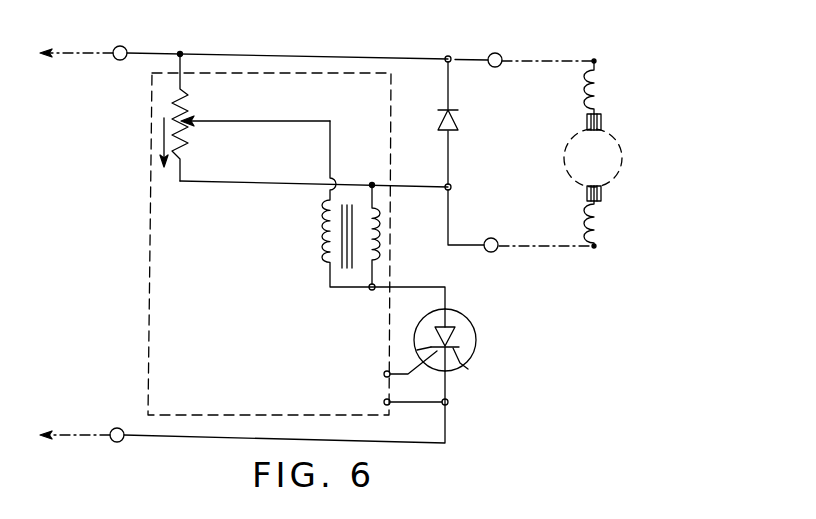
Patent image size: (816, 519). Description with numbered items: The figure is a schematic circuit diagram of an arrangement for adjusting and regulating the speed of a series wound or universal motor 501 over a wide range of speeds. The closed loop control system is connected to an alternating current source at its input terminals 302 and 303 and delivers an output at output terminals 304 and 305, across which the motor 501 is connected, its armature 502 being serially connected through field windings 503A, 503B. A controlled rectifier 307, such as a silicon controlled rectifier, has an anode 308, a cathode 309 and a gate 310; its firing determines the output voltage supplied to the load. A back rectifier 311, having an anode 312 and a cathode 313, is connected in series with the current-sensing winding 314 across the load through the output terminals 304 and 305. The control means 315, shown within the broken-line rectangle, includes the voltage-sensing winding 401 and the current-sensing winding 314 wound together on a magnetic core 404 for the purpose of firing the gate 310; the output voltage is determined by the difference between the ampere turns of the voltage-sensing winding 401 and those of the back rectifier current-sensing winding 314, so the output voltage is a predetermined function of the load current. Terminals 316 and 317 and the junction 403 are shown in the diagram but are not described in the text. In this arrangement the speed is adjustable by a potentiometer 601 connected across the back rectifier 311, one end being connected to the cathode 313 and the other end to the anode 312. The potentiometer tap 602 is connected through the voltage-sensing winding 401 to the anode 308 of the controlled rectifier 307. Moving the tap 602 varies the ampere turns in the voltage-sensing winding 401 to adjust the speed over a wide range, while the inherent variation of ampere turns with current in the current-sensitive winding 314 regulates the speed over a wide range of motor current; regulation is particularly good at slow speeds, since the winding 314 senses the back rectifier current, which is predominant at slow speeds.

The input terminal 302 is at (119, 61).
The input terminal 303 is at (128, 442).
The output terminal 304 is at (500, 55).
The output terminal 305 is at (492, 252).
The controlled rectifier 307 is at (456, 339).
The anode 308 is at (451, 333).
The cathode 309 is at (469, 367).
The gate 310 is at (417, 350).
The back rectifier 311 is at (479, 121).
The anode of back rectifier 312 is at (453, 131).
The cathode of back rectifier 313 is at (452, 109).
The current-sensing winding 314 is at (379, 244).
The control means 315 is at (292, 99).
The gate terminal 316 is at (384, 375).
The cathode terminal 317 is at (413, 405).
The voltage-sensing winding 401 is at (322, 240).
The winding junction 403 is at (369, 290).
The magnetic core 404 is at (348, 205).
The motor 501 is at (603, 153).
The armature 502 is at (623, 165).
The field winding 503A is at (602, 104).
The field winding 503B is at (603, 225).
The potentiometer 601 is at (189, 134).
The tap 602 is at (192, 118).